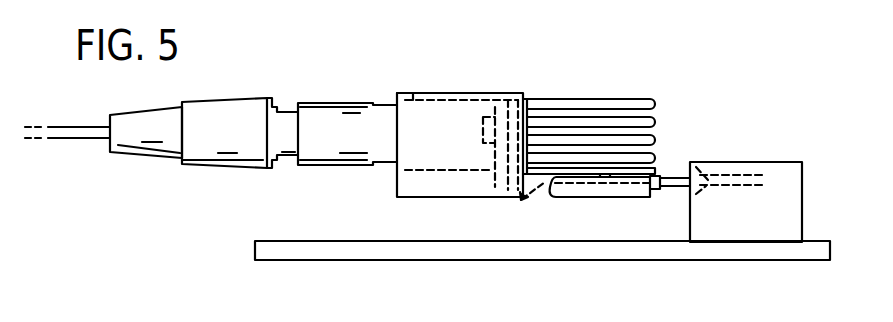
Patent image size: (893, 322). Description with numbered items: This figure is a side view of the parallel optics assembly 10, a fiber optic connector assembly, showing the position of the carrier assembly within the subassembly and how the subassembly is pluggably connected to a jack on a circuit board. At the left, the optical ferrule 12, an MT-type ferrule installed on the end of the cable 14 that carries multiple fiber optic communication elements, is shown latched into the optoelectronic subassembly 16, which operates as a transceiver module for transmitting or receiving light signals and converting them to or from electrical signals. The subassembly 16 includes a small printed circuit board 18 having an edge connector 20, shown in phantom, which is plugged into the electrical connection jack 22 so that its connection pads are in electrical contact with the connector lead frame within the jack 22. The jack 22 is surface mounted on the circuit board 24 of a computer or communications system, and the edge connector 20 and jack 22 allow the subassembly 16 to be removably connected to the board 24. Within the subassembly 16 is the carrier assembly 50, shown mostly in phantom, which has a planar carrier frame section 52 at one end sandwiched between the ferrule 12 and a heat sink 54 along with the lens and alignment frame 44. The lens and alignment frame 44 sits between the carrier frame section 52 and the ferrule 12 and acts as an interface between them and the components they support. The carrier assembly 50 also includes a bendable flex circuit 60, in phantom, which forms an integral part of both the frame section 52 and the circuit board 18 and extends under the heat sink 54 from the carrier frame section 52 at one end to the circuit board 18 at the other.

The fiber optic connector assembly 10 is at (329, 58).
The optical ferrule 12 is at (213, 172).
The cable 14 is at (86, 142).
The optoelectronic subassembly 16 is at (395, 183).
The printed circuit board 18 is at (673, 176).
The edge connector 20 is at (725, 162).
The electrical connection jack 22 is at (790, 163).
The circuit board 24 is at (617, 262).
The lens and alignment frame 44 is at (495, 99).
The carrier assembly 50 is at (671, 193).
The carrier frame section 52 is at (508, 100).
The heat sink 54 is at (586, 100).
The flex circuit 60 is at (522, 201).